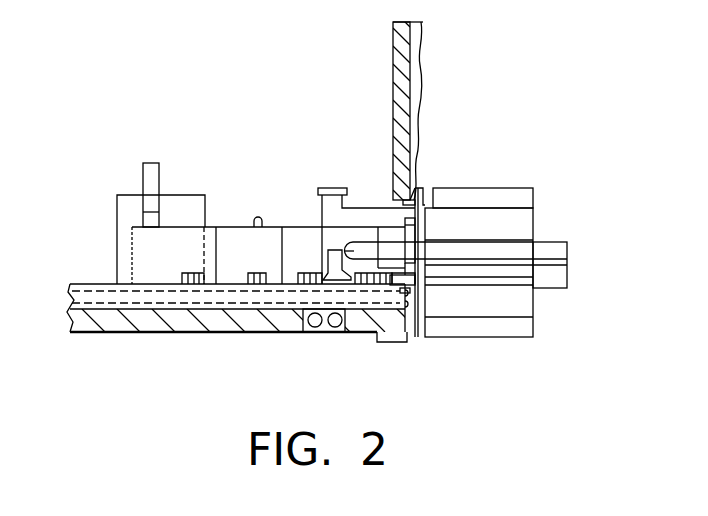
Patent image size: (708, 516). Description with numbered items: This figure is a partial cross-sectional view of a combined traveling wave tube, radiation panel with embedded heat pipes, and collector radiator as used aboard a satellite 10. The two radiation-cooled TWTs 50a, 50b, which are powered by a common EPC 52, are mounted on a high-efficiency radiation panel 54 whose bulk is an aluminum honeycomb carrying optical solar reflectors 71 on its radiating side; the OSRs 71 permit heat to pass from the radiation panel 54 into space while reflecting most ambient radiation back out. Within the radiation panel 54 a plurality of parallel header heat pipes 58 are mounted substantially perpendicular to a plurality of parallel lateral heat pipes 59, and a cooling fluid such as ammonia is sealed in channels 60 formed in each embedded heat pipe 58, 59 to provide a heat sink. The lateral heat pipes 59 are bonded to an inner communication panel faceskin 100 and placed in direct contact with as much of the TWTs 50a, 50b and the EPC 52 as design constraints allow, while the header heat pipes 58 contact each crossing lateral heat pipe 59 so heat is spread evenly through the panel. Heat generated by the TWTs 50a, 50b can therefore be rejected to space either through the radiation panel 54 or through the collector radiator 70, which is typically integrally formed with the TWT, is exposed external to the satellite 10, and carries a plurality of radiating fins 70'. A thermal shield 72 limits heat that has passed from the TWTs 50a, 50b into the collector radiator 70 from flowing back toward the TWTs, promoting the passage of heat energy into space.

The satellite 10 is at (544, 86).
The EPC 52 is at (127, 194).
The TWT 50a is at (246, 191).
The TWT 50b is at (217, 226).
The inner communication panel faceskin 100 is at (155, 283).
The lateral heat pipes 59 is at (117, 328).
The channels 60 is at (143, 302).
The optical solar reflectors 71 is at (215, 333).
The radiation panel 54 is at (260, 320).
The header heat pipes 58 is at (348, 332).
The thermal shield 72 is at (413, 146).
The collector radiator 70 is at (477, 248).
The radiating fins 70' is at (560, 239).